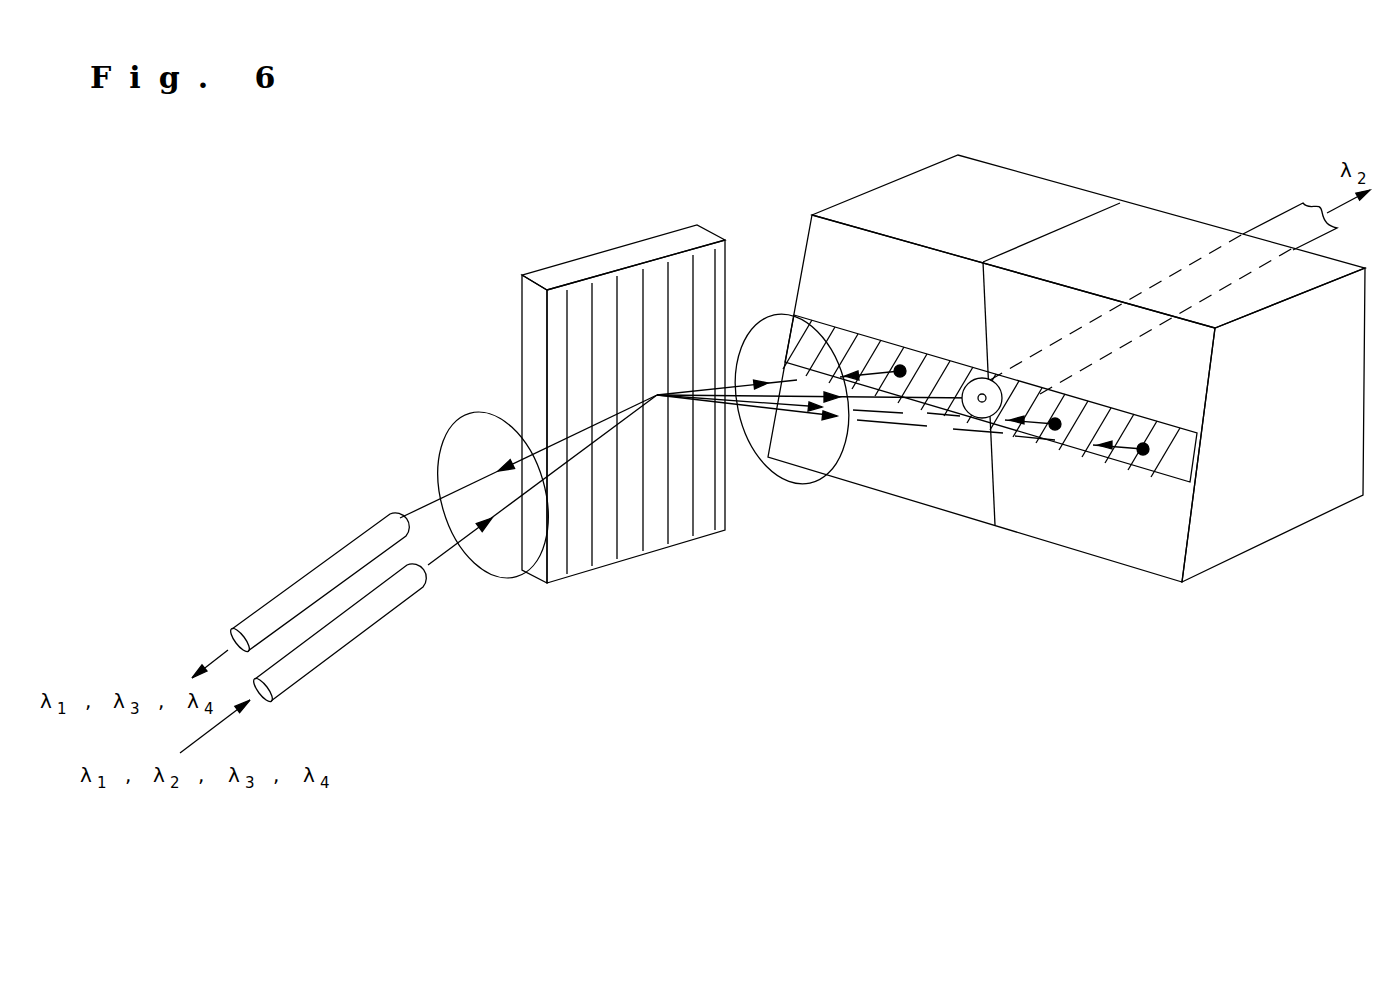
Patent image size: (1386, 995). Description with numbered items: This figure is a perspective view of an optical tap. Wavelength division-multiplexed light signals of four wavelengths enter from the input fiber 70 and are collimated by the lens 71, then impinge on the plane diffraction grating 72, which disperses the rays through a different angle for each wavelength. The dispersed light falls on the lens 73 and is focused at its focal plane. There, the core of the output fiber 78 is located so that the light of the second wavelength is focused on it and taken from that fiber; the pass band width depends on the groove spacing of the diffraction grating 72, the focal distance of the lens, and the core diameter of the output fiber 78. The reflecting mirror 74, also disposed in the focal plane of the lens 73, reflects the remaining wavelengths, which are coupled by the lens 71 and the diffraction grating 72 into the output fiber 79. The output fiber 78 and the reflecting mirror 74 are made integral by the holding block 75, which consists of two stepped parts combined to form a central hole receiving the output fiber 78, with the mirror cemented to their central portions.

The input fiber 70 is at (350, 638).
The lens 71 is at (483, 573).
The plane diffraction grating 72 is at (582, 262).
The lens 73 is at (808, 485).
The reflecting mirror 74 is at (1165, 465).
The holding block 75 is at (1268, 545).
The output fiber 78 is at (1273, 228).
The output fiber 79 is at (262, 613).